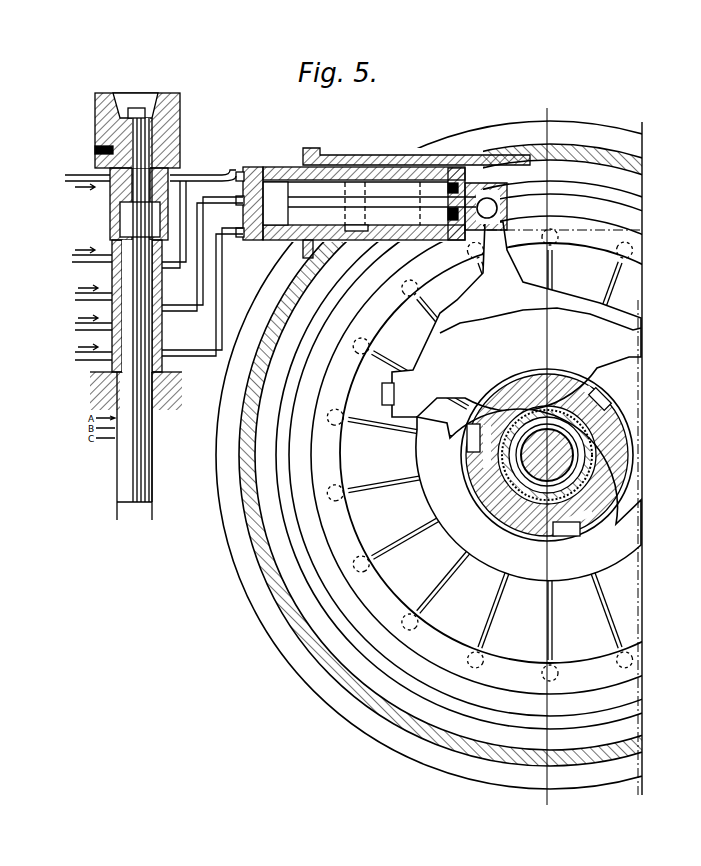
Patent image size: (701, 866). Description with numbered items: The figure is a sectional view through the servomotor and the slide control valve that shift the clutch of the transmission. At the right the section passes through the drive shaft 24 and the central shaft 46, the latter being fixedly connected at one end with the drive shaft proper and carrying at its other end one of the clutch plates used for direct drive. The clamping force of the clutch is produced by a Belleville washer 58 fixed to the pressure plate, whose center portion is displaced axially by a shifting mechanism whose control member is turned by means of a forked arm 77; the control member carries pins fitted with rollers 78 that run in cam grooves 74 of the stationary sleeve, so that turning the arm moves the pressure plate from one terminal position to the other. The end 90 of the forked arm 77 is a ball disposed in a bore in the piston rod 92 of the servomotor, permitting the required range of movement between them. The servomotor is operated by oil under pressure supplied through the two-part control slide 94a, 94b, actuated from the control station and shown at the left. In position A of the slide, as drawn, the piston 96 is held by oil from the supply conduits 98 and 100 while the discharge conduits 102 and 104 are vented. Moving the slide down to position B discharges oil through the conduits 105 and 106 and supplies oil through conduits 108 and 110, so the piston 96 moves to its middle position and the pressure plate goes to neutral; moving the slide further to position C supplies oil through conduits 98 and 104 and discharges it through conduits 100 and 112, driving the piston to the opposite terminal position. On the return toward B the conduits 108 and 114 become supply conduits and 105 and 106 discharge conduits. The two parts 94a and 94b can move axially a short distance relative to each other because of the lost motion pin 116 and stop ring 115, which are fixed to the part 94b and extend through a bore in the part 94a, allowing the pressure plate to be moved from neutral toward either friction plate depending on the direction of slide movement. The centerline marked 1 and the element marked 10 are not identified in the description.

The section line 1 is at (564, 458).
The bearing housing 10 is at (618, 487).
The drive shaft 24 is at (567, 432).
The central shaft 46 is at (515, 396).
The Belleville washer 58 is at (468, 613).
The cam grooves 74 is at (497, 398).
The forked arm 77 is at (576, 308).
The rollers 78 is at (467, 433).
The end of forked arm 90 is at (489, 205).
The piston rod 92 is at (355, 202).
The control slide part 94a is at (127, 218).
The control slide part 94b is at (174, 130).
The piston 96 is at (277, 190).
The supply conduit 98 is at (108, 293).
The supply conduit 100 is at (186, 268).
The discharge conduit 102 is at (108, 323).
The discharge conduit 104 is at (198, 311).
The conduit 105 is at (108, 352).
The conduit 106 is at (203, 356).
The conduit 108 is at (76, 174).
The conduit 110 is at (192, 174).
The conduit 112 is at (90, 258).
The conduit 114 is at (232, 172).
The stop ring 115 is at (128, 108).
The lost motion pin 116 is at (140, 135).